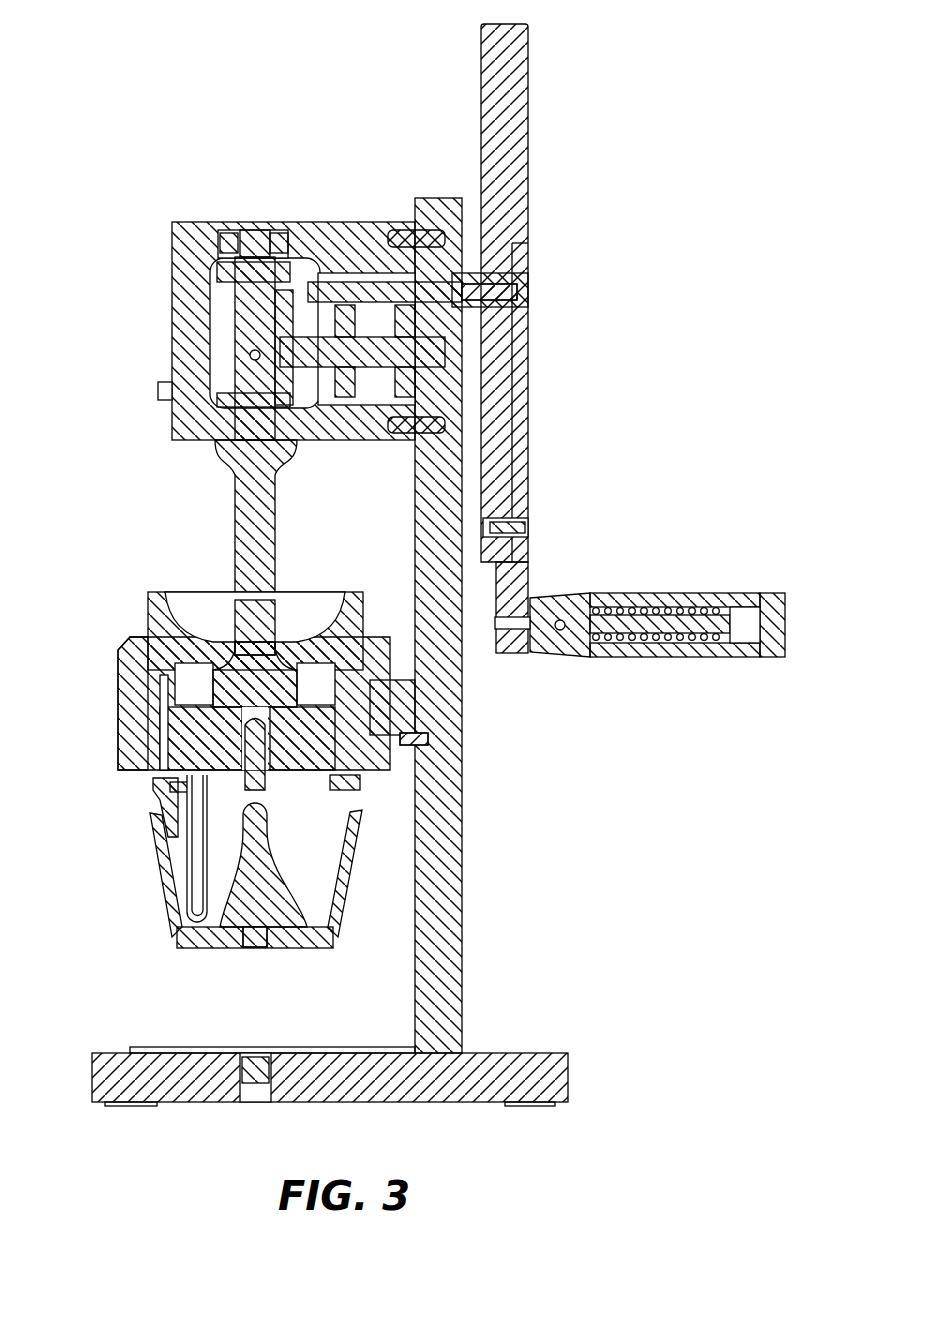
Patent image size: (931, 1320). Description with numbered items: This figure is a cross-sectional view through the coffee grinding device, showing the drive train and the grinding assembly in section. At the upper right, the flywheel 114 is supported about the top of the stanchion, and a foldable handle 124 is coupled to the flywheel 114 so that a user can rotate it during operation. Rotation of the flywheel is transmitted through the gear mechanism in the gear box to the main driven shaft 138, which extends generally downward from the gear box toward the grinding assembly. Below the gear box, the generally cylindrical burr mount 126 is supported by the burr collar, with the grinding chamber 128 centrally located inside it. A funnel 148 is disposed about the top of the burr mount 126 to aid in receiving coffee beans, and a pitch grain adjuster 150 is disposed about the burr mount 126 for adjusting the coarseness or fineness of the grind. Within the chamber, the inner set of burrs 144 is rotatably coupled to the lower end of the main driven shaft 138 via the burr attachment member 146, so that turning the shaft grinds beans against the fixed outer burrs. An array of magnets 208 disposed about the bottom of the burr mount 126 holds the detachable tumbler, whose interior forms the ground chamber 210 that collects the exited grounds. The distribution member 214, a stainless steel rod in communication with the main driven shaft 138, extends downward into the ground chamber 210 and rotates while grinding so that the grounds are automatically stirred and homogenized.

The flywheel 114 is at (530, 79).
The foldable handle 124 is at (700, 593).
The burr mount 126 is at (138, 637).
The grinding chamber 128 is at (193, 683).
The main driven shaft 138 is at (235, 530).
The inner set of burrs 144 is at (313, 777).
The burr attachment member 146 is at (255, 790).
The funnel 148 is at (340, 593).
The pitch grain adjuster 150 is at (120, 653).
The array of magnets 208 is at (130, 767).
The ground chamber 210 is at (303, 898).
The distribution member 214 is at (187, 875).